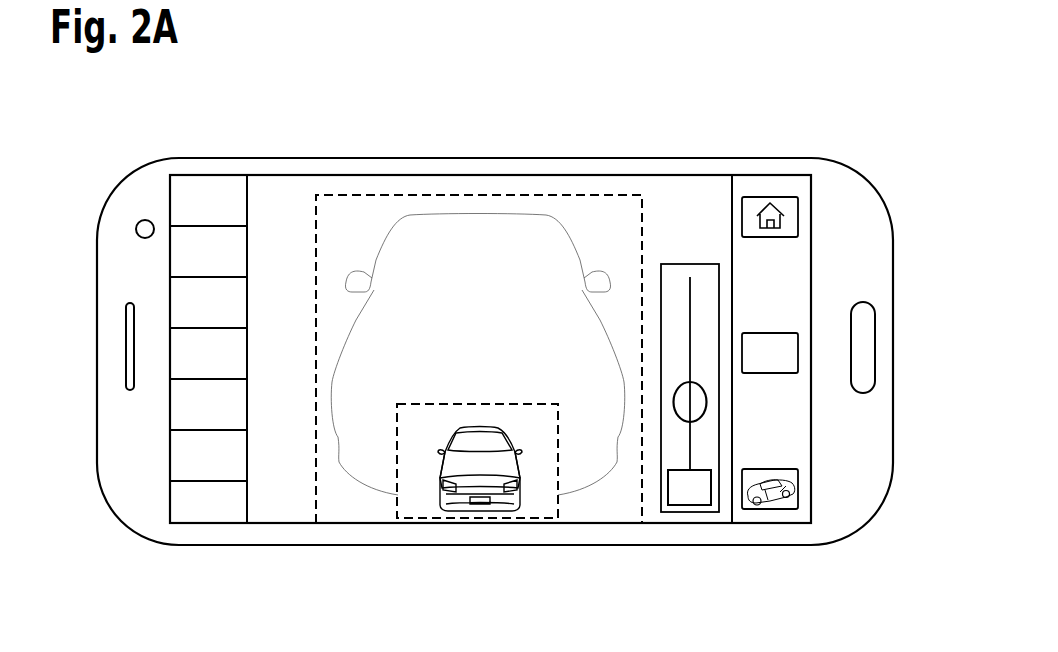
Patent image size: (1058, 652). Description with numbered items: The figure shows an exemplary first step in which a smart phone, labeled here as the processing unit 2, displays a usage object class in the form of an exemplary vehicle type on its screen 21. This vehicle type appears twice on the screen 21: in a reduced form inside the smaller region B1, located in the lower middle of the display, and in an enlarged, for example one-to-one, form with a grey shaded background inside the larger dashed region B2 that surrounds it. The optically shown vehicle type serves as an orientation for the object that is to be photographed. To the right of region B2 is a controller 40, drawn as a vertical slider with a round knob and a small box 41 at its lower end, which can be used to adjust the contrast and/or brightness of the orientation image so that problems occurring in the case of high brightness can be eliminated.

The processing unit 2 is at (120, 522).
The screen 21 is at (681, 230).
The controller 40 is at (567, 230).
The slider control element 41 is at (688, 445).
The region B1 is at (395, 478).
The region B2 is at (403, 194).